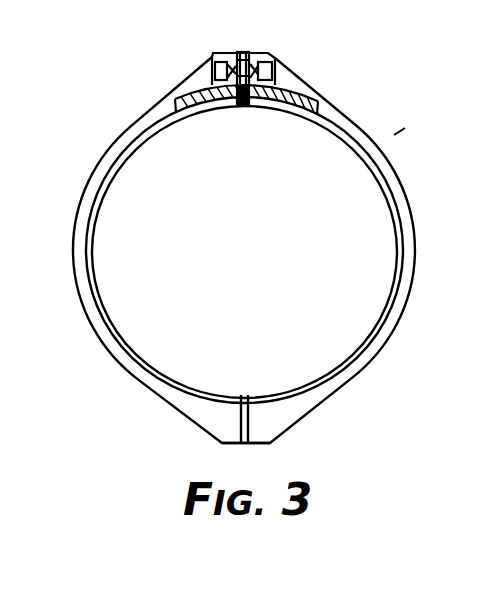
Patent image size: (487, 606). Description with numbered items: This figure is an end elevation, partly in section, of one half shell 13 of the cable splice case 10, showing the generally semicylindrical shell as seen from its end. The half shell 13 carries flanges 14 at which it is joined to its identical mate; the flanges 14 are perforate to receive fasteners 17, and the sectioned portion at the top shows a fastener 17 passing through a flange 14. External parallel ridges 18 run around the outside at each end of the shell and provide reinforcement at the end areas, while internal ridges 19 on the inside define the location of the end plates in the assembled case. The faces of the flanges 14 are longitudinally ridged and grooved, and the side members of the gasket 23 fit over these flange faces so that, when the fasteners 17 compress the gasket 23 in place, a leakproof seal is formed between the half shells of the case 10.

The cable splice case 10 is at (398, 129).
The half shell 13 is at (398, 208).
The flange 14 is at (256, 54).
The fastener 17 is at (272, 63).
The external parallel ridge 18 is at (417, 253).
The internal ridge 19 is at (363, 341).
The gasket 23 is at (247, 115).